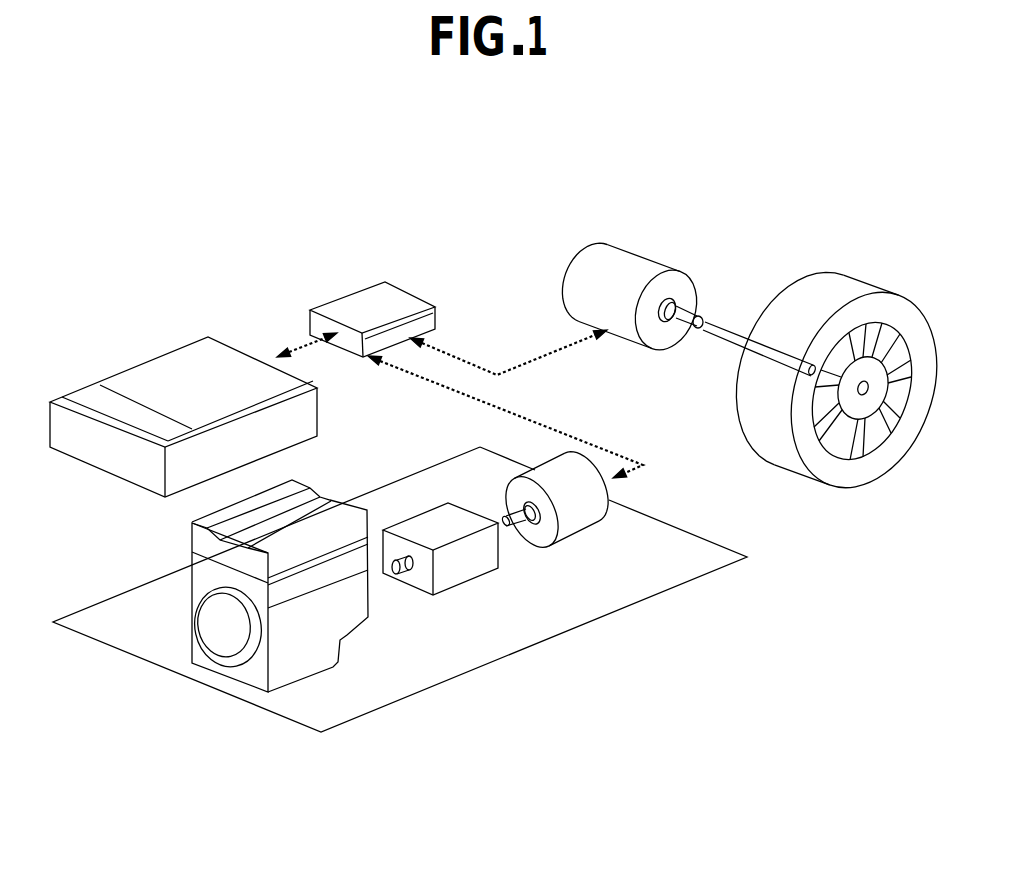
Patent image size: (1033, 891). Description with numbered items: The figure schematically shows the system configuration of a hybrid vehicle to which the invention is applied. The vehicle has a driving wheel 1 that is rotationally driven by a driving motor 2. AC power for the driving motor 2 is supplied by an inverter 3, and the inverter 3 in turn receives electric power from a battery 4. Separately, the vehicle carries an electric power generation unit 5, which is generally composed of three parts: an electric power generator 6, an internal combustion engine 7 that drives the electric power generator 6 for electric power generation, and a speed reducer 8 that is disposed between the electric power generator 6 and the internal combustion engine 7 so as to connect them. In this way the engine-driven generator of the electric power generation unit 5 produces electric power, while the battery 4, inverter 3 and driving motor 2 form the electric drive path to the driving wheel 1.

The driving wheel 1 is at (835, 290).
The driving motor 2 is at (628, 267).
The inverter 3 is at (360, 300).
The battery 4 is at (182, 367).
The electric power generation unit 5 is at (117, 658).
The electric power generator 6 is at (585, 515).
The internal combustion engine 7 is at (308, 655).
The speed reducer 8 is at (467, 562).